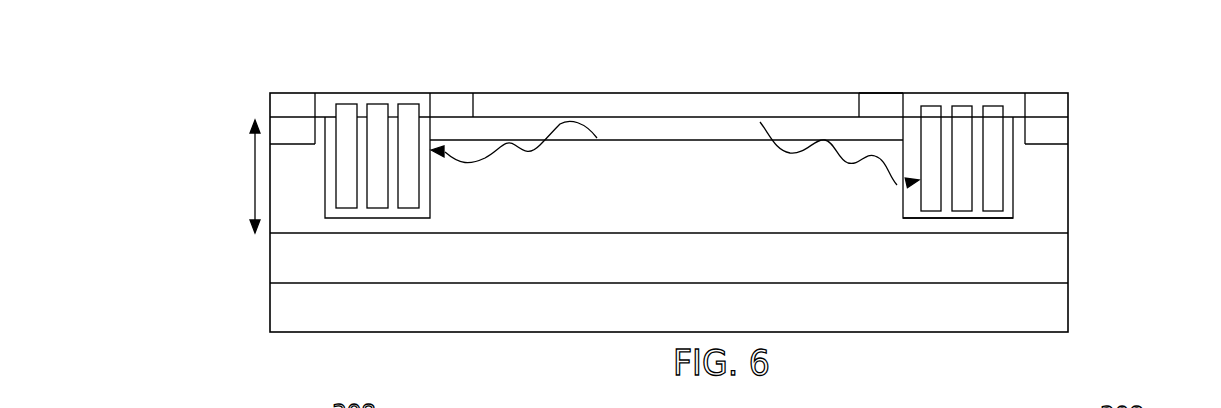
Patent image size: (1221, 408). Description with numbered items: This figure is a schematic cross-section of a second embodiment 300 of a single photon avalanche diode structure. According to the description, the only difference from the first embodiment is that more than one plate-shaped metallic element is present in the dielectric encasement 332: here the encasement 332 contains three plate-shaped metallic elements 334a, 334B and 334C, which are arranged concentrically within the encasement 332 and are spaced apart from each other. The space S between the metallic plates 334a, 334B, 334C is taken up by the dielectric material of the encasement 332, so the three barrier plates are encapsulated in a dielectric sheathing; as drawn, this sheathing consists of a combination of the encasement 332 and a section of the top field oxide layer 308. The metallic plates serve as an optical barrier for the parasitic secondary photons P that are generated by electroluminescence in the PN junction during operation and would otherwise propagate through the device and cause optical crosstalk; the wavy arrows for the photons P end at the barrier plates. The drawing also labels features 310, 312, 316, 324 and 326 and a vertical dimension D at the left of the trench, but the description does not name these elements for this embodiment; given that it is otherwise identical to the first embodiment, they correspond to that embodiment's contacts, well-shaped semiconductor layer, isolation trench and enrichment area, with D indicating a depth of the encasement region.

The second embodiment of a SPAD structure 300 is at (1067, 38).
The top field oxide layer 308 is at (513, 96).
The left isolation region 310 is at (294, 94).
The cap segment 312 is at (885, 93).
The substrate 316 is at (694, 203).
The trench liner bottom 324 is at (1010, 220).
The right isolation region 326 is at (1060, 133).
The dielectric encasement 332 is at (1023, 193).
The plate-shaped metallic element 334a is at (1012, 154).
The plate-shaped metallic element 334B is at (959, 106).
The plate-shaped metallic element 334C is at (408, 104).
The space between the metallic plates S is at (362, 128).
The secondary photons P is at (796, 130).
The trench depth D is at (243, 176).